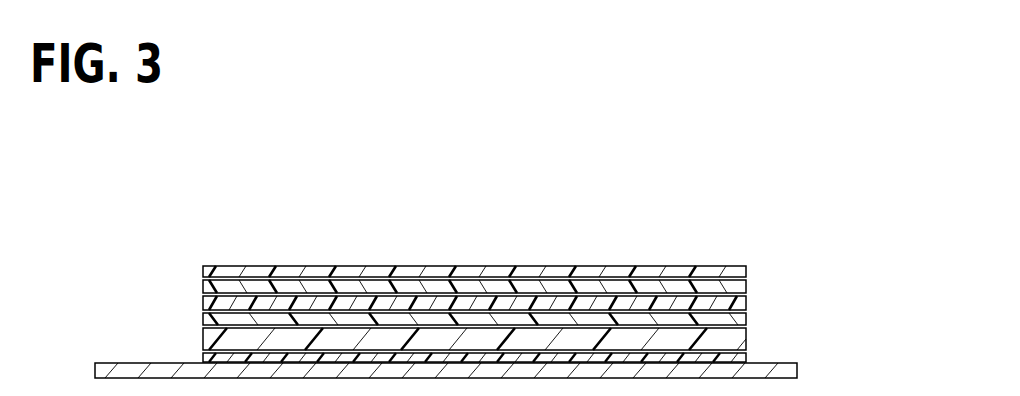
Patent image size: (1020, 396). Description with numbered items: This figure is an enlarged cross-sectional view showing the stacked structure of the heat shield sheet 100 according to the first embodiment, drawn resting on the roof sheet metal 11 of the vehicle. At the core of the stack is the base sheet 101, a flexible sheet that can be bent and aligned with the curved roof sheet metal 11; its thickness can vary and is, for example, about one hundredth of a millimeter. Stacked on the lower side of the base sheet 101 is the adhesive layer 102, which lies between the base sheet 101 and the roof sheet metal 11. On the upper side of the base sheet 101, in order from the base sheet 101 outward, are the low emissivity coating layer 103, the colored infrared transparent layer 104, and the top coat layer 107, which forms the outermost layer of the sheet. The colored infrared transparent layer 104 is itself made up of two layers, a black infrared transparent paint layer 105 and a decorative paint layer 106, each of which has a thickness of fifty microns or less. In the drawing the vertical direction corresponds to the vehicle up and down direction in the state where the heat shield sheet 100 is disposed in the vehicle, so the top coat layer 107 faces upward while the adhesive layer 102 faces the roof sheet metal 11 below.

The heat shield sheet 100 is at (199, 242).
The roof sheet metal 11 is at (131, 363).
The top coat layer 107 is at (747, 270).
The colored infrared transparent layer 104 is at (551, 269).
The decorative paint layer 106 is at (747, 287).
The black infrared transparent paint layer 105 is at (747, 305).
The low emissivity coating layer 103 is at (747, 318).
The base sheet 101 is at (747, 338).
The adhesive layer 102 is at (747, 357).